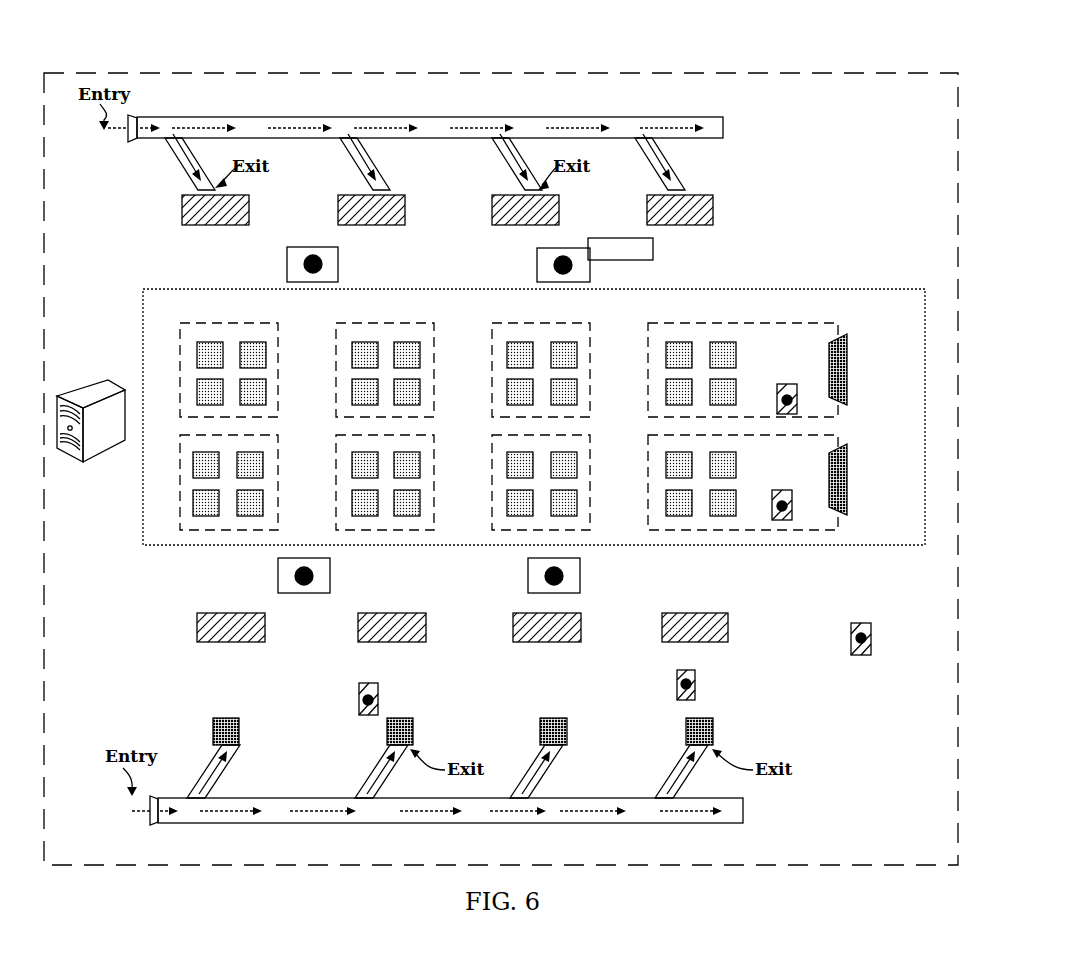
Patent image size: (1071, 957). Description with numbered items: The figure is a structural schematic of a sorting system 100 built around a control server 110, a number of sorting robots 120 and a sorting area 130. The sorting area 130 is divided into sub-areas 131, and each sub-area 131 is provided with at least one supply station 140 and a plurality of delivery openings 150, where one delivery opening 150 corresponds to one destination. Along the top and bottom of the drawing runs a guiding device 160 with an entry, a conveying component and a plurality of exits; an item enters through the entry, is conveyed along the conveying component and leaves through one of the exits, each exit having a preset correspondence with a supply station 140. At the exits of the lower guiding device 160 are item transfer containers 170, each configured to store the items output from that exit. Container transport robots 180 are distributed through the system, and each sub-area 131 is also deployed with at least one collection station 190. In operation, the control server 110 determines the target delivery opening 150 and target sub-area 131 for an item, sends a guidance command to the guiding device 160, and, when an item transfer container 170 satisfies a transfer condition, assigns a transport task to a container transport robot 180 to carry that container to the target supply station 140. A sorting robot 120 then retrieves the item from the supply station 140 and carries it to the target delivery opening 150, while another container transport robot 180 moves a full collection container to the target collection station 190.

The sorting system 100 is at (790, 71).
The control server 110 is at (90, 378).
The sorting robot 120 is at (338, 262).
The sorting area 130 is at (775, 290).
The sub-area 131 is at (232, 323).
The supply station 140 is at (405, 210).
The delivery opening 150 is at (418, 343).
The guiding device 160 is at (218, 117).
The item transfer container 170 is at (230, 718).
The container transport robot 180 is at (787, 384).
The collection station 190 is at (847, 360).